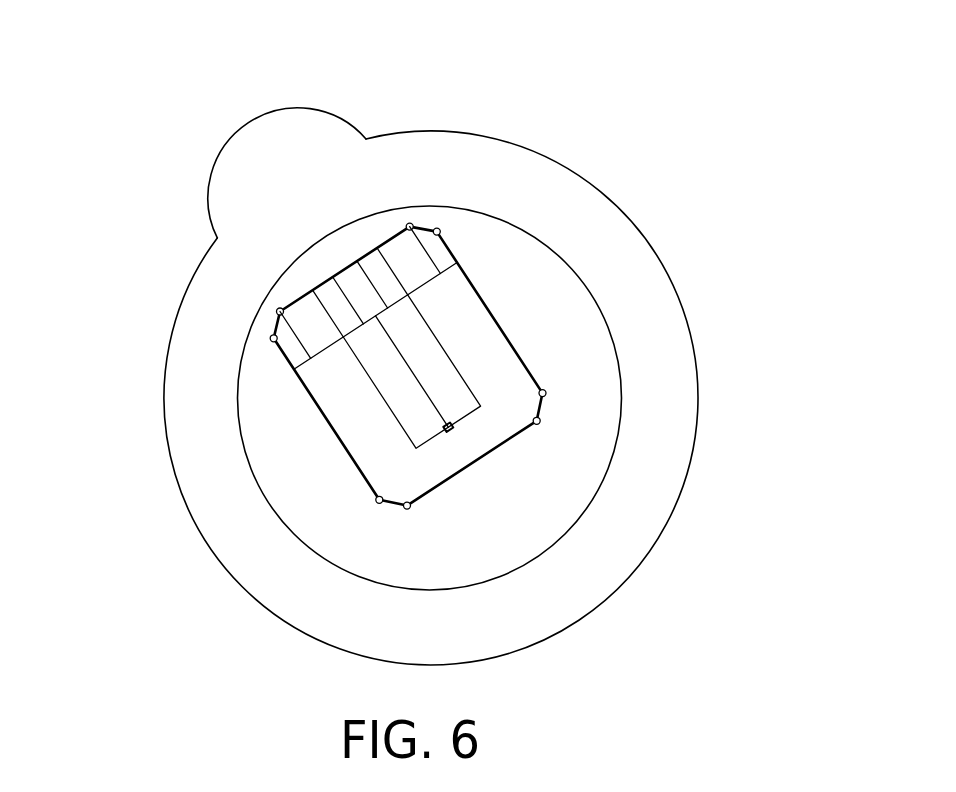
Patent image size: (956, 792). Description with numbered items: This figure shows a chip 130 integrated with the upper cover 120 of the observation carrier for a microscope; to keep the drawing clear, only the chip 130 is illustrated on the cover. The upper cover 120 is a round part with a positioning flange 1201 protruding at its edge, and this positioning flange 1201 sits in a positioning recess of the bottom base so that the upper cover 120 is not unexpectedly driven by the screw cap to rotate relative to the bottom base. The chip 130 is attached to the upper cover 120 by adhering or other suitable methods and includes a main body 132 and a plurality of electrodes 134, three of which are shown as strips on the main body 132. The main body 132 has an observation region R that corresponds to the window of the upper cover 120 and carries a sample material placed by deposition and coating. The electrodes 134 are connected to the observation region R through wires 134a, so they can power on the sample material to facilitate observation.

The upper cover 120 is at (615, 268).
The positioning flange 1201 is at (252, 172).
The chip 130 is at (535, 268).
The main body 132 is at (470, 312).
The electrodes 134 is at (305, 320).
The wires 134a is at (397, 420).
The observation region R is at (465, 437).